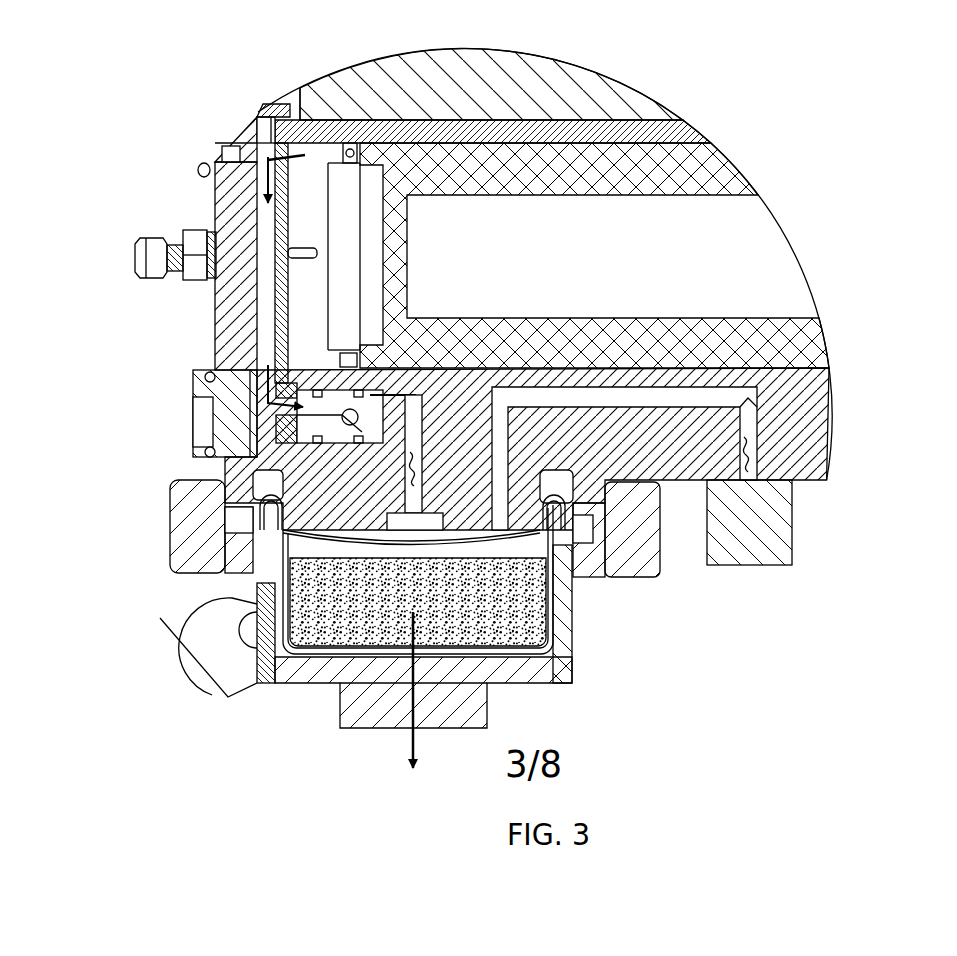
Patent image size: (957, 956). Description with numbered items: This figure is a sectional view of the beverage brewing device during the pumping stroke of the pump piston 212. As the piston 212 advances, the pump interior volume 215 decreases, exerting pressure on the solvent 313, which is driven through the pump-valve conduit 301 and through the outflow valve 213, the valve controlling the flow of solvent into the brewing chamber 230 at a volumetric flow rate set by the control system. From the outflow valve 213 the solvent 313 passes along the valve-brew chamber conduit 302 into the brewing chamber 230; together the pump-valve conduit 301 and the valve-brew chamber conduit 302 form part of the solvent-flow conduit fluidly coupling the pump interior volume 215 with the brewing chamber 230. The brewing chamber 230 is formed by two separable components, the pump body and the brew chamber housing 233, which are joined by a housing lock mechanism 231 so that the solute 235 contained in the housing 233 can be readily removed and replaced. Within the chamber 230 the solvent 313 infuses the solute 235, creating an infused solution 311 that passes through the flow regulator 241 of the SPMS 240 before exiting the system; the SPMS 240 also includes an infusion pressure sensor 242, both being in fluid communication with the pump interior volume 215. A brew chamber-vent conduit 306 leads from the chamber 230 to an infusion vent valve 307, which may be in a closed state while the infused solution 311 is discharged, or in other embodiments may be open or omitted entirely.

The pump piston 212 is at (680, 178).
The outflow valve 213 is at (340, 414).
The pump interior volume 215 is at (290, 296).
The brewing chamber 230 is at (310, 553).
The housing lock mechanism 231 is at (643, 540).
The brew chamber housing 233 is at (563, 610).
The solute 235 is at (308, 618).
The SPMS 240 is at (333, 746).
The flow regulator 241 is at (470, 687).
The infusion pressure sensor 242 is at (212, 410).
The pump-valve conduit 301 is at (264, 300).
The valve-brew chamber conduit 302 is at (412, 472).
The brew chamber-vent conduit 306 is at (750, 452).
The infusion vent valve 307 is at (750, 555).
The infused solution 311 is at (410, 687).
The solvent 313 is at (268, 158).